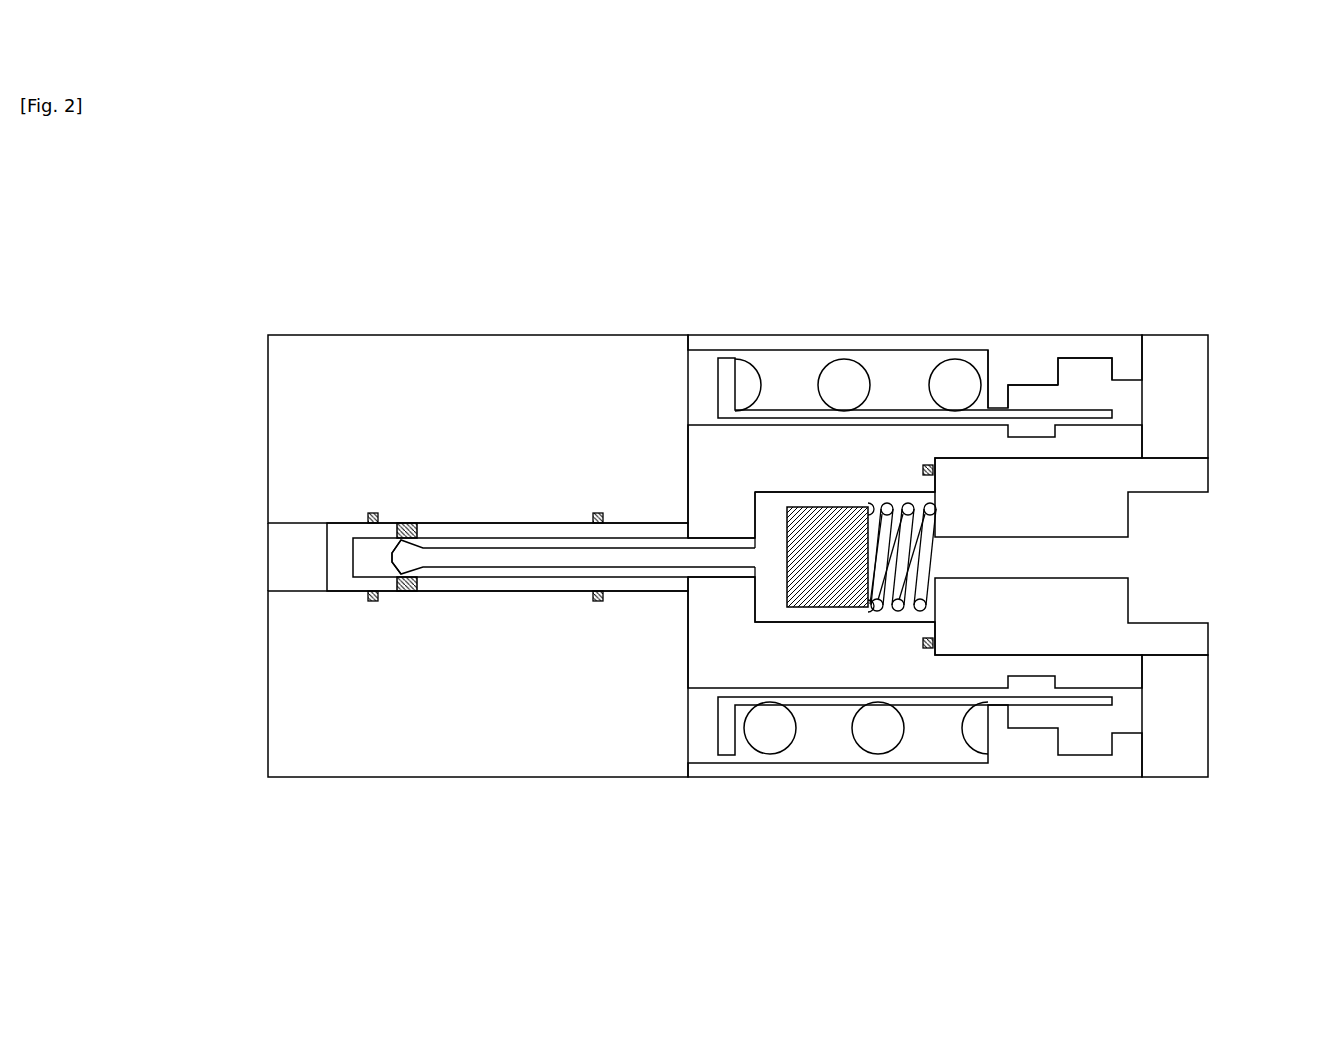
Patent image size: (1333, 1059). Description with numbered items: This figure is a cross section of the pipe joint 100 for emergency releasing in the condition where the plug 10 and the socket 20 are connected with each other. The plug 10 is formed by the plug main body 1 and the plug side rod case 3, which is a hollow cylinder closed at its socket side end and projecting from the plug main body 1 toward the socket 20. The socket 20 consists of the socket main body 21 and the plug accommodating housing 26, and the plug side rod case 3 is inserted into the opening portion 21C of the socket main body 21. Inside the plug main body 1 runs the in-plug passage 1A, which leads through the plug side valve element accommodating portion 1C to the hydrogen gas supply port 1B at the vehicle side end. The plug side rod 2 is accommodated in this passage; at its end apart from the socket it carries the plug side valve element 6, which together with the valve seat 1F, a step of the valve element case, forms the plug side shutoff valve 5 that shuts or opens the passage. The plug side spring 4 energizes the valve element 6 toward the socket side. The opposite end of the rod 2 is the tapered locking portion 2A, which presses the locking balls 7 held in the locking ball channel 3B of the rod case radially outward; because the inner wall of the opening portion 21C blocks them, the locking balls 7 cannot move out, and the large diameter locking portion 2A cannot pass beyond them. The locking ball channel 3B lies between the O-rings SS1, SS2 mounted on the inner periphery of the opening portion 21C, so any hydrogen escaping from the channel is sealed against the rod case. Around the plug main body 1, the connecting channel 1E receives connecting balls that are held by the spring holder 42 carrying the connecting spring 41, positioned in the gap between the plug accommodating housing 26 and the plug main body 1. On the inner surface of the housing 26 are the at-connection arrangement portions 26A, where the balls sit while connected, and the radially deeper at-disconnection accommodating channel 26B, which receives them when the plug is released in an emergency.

The pipe joint 100 is at (576, 302).
The socket 20 is at (357, 324).
The socket main body 21 is at (295, 335).
The opening portion 21C is at (310, 589).
The plug side rod 2 is at (629, 560).
The locking portion 2A is at (418, 576).
The plug side rod case 3 is at (507, 592).
The locking ball channel 3B is at (407, 592).
The locking balls 7 is at (407, 523).
The O-ring SS1 is at (597, 602).
The O-ring SS2 is at (373, 602).
The plug 10 is at (1232, 473).
The plug main body 1 is at (688, 668).
The in-plug passage 1A is at (782, 500).
The hydrogen gas supply port 1B is at (1183, 623).
The plug side valve element accommodating portion 1C is at (841, 499).
The connecting channel 1E is at (1048, 430).
The valve seat 1F is at (757, 600).
The plug side shutoff valve 5 is at (757, 541).
The plug side valve element 6 is at (818, 608).
The plug side spring 4 is at (902, 608).
The connecting spring 41 is at (840, 382).
The spring holder 42 is at (1097, 410).
The plug accommodating housing 26 is at (880, 345).
The at-connection arrangement portions 26A is at (1028, 394).
The at-disconnection accommodating channel 26B is at (1090, 370).